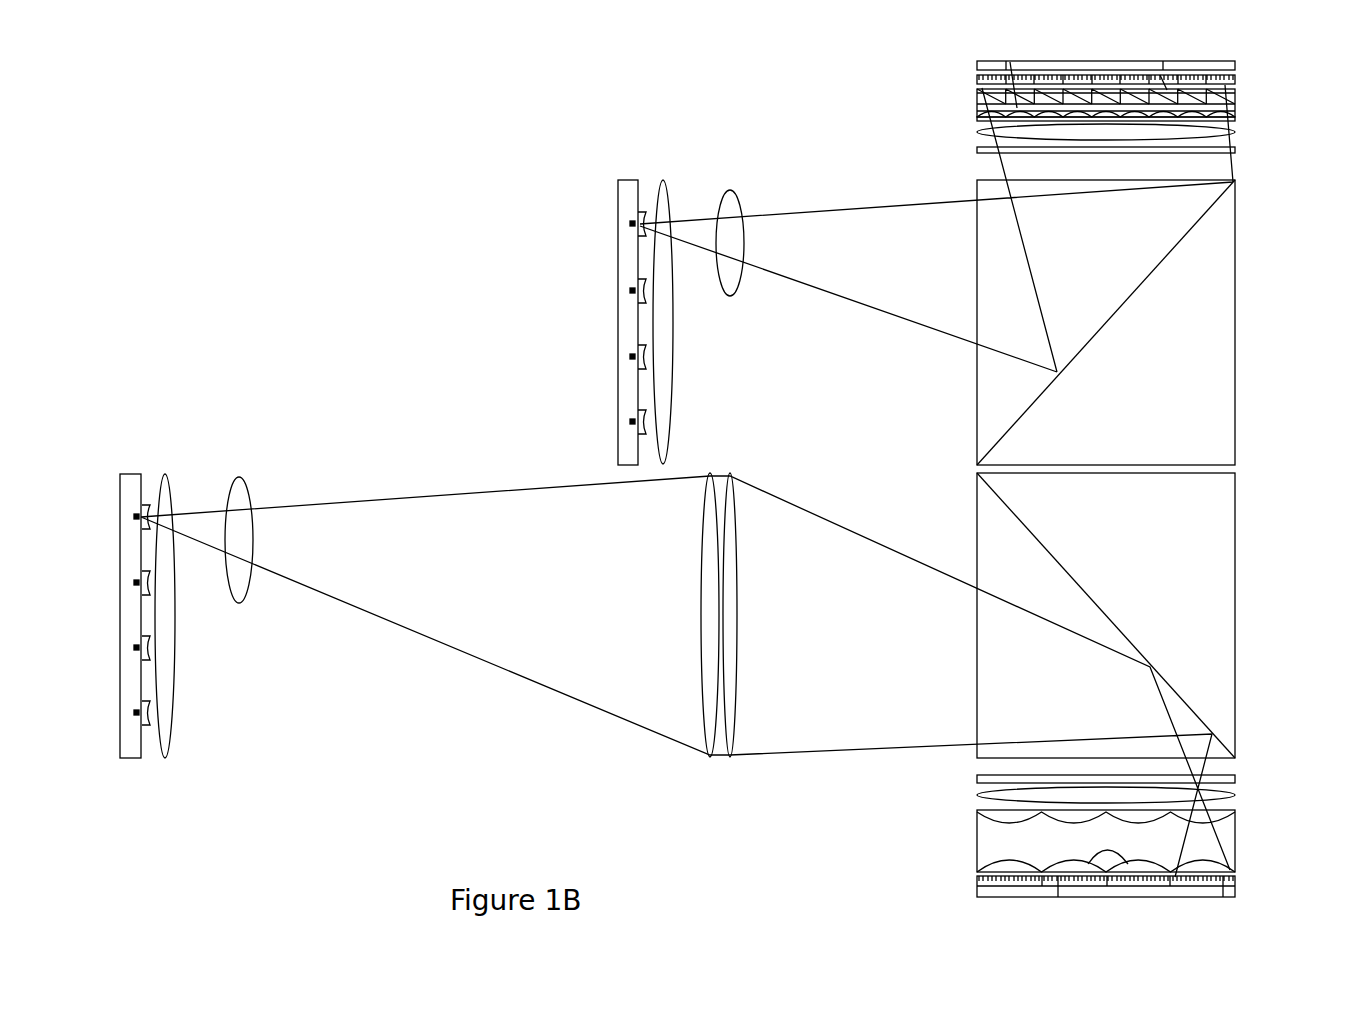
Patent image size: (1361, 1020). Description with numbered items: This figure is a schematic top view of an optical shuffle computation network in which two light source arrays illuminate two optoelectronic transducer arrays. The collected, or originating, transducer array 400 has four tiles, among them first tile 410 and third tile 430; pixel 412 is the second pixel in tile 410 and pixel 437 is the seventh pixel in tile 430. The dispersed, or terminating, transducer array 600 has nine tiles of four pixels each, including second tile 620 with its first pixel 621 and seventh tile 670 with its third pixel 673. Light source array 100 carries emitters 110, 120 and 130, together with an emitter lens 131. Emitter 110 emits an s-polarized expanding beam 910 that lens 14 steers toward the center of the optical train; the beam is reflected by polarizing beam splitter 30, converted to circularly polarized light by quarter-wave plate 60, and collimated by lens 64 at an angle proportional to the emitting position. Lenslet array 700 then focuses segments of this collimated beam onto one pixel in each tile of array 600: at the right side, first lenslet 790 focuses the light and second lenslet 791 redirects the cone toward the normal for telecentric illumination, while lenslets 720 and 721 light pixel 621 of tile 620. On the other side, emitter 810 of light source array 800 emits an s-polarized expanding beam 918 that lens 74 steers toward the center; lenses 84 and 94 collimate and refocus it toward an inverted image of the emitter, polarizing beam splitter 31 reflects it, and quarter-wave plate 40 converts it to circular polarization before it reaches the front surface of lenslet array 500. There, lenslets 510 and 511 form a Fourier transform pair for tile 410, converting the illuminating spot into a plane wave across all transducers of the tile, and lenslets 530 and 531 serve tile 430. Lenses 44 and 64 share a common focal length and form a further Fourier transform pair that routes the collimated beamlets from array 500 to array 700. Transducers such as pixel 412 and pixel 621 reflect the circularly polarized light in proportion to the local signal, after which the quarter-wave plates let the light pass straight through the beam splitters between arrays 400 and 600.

The lens 14 is at (663, 182).
The polarizing beam splitter 30 is at (1237, 203).
The polarizing beam splitter 31 is at (1237, 488).
The quarter-wave plate 40 is at (977, 778).
The lens 44 is at (977, 795).
The quarter-wave plate 60 is at (1237, 150).
The lens 64 is at (1237, 132).
The lens 74 is at (170, 482).
The lens 84 is at (710, 473).
The lens 94 is at (731, 473).
The light source array 100 is at (628, 178).
The emitter 110 is at (628, 226).
The emitter 120 is at (628, 291).
The emitter 130 is at (628, 357).
The emitter lens 131 is at (642, 367).
The collected optoelectronic transducer array 400 is at (977, 893).
The first tile 410 is at (1235, 903).
The pixel 412 is at (1223, 897).
The third tile 430 is at (1107, 903).
The pixel 437 is at (1058, 897).
The lenslet array 500 is at (1100, 871).
The first lenslet 510 is at (1237, 875).
The second lenslet 511 is at (1230, 835).
The lenslet 530 is at (1118, 856).
The lenslet 531 is at (1092, 820).
The dispersed optoelectronic transducer array 600 is at (1237, 62).
The second tile 620 is at (1013, 61).
The pixel 621 is at (1010, 62).
The seventh tile 670 is at (1163, 61).
The pixel 673 is at (1160, 75).
The lenslet array 700 is at (977, 89).
The lenslet 720 is at (980, 111).
The lenslet 721 is at (977, 100).
The first lenslet 790 is at (1237, 119).
The second lenslet 791 is at (1237, 93).
The light source array 800 is at (131, 474).
The emitter 810 is at (142, 505).
The expanding beam 910 is at (733, 193).
The expanding beam 918 is at (248, 492).